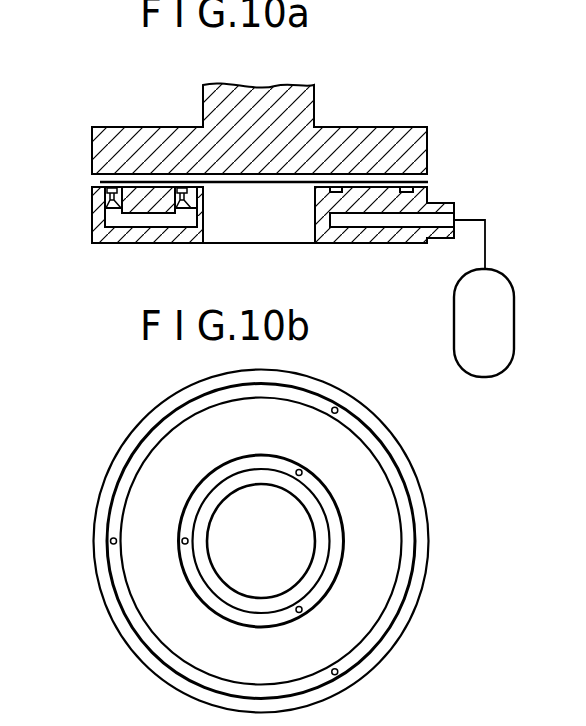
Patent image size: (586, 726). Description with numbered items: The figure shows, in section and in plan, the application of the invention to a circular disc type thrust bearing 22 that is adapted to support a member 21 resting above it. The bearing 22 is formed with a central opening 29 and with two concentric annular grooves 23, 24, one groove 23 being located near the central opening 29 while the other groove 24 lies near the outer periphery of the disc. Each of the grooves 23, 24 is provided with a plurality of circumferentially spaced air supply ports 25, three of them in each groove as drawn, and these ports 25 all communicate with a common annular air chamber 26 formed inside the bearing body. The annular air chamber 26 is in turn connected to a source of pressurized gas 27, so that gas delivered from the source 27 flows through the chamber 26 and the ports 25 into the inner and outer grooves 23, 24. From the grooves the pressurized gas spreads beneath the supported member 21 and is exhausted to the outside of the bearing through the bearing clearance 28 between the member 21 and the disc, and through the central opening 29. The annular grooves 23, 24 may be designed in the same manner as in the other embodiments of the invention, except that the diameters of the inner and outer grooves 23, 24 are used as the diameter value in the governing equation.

In FIG. 10a, the member 21 is at (346, 140).
In FIG. 10a, the thrust bearing 22 is at (432, 198).
In FIG. 10a, the inner annular groove 23 is at (195, 188).
In FIG. 10b, the inner annular groove 23 is at (337, 527).
In FIG. 10a, the outer annular groove 24 is at (106, 190).
In FIG. 10b, the outer annular groove 24 is at (388, 464).
In FIG. 10a, the air supply ports 25 is at (110, 201).
In FIG. 10b, the air supply ports 25 is at (110, 543).
In FIG. 10a, the annular air chamber 26 is at (157, 221).
In FIG. 10a, the source of pressurized gas 27 is at (495, 323).
In FIG. 10a, the bearing clearance 28 is at (128, 182).
In FIG. 10a, the central opening 29 is at (291, 189).
In FIG. 10b, the central opening 29 is at (293, 568).